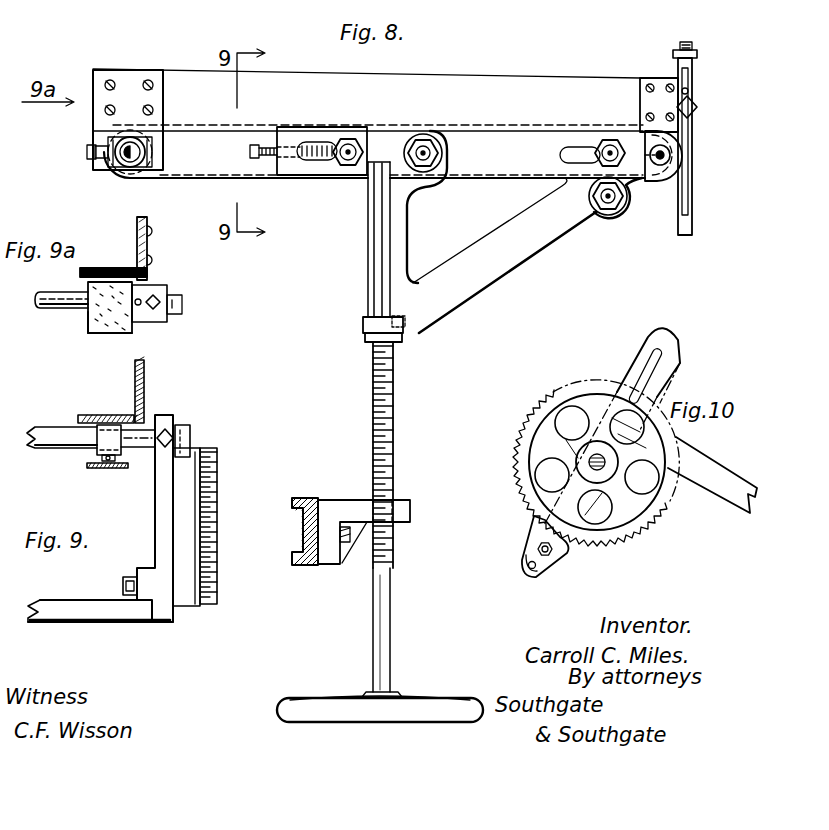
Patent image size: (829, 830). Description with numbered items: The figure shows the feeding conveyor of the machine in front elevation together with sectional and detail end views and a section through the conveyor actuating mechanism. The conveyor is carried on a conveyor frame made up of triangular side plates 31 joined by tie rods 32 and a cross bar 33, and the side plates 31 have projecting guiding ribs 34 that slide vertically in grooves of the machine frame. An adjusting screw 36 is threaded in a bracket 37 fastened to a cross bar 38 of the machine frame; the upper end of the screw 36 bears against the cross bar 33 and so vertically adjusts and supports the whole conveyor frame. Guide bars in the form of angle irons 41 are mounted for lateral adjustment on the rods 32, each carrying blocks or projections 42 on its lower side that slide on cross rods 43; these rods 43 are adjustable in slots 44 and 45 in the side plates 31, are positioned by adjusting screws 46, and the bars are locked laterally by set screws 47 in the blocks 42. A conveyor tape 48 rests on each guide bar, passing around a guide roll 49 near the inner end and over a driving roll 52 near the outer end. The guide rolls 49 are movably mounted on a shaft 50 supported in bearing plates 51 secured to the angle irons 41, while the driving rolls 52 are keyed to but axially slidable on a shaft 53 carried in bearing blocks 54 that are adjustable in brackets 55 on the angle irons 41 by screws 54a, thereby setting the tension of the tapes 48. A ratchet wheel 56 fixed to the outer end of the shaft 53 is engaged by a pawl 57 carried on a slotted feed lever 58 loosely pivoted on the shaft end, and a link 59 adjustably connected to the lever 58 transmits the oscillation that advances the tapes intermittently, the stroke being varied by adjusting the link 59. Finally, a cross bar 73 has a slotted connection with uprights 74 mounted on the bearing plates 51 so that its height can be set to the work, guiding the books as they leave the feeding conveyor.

In FIG. 8, the triangular side plates 31 is at (490, 246).
In FIG. 9, the triangular side plates 31 is at (160, 491).
In FIG. 8, the tie rods 32 is at (442, 153).
In FIG. 8, the cross bar 33 is at (418, 335).
In FIG. 9, the cross bar 33 is at (78, 603).
In FIG. 8, the guiding ribs 34 is at (380, 264).
In FIG. 9, the guiding ribs 34 is at (214, 500).
In FIG. 8, the adjusting screw 36 is at (395, 408).
In FIG. 8, the bracket 37 is at (413, 512).
In FIG. 8, the cross bar 38 is at (312, 494).
In FIG. 8, the outside guide bars 41 is at (588, 78).
In FIG. 9A, the outside guide bars 41 is at (148, 245).
In FIG. 9, the outside guide bars 41 is at (145, 385).
In FIG. 9, the blocks or projections 42 is at (97, 437).
In FIG. 8, the cross rods 43 is at (348, 147).
In FIG. 9, the cross rods 43 is at (48, 430).
In FIG. 8, the slot 44 is at (322, 160).
In FIG. 8, the slot 45 is at (572, 153).
In FIG. 8, the adjusting screws 46 is at (255, 158).
In FIG. 9, the adjusting screws 46 is at (176, 430).
In FIG. 9, the set screws 47 is at (102, 458).
In FIG. 8, the conveyor tape 48 is at (198, 180).
In FIG. 9A, the conveyor tape 48 is at (110, 334).
In FIG. 9, the conveyor tape 48 is at (102, 415).
In FIG. 8, the guide roll 49 is at (673, 157).
In FIG. 8, the shaft 50 is at (670, 152).
In FIG. 8, the bearing plates 51 is at (658, 93).
In FIG. 8, the driving rolls 52 is at (126, 176).
In FIG. 9A, the driving rolls 52 is at (88, 319).
In FIG. 8, the shaft 53 is at (146, 153).
In FIG. 10, the shaft 53 is at (591, 452).
In FIG. 9A, the shaft 53 is at (36, 299).
In FIG. 8, the bearing blocks 54 is at (167, 140).
In FIG. 8, the screws 54a is at (88, 151).
In FIG. 8, the brackets 55 is at (132, 85).
In FIG. 10, the ratchet wheel 56 is at (516, 452).
In FIG. 10, the pawl 57 is at (530, 523).
In FIG. 10, the slotted feed lever 58 is at (643, 357).
In FIG. 10, the link 59 is at (717, 487).
In FIG. 8, the cross bar 73 is at (697, 55).
In FIG. 8, the uprights 74 is at (690, 75).